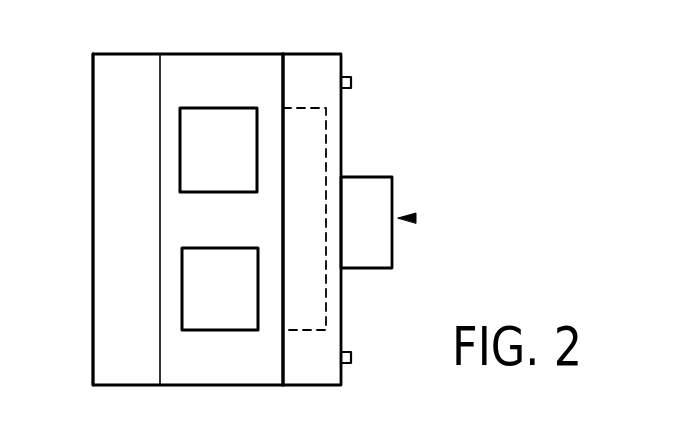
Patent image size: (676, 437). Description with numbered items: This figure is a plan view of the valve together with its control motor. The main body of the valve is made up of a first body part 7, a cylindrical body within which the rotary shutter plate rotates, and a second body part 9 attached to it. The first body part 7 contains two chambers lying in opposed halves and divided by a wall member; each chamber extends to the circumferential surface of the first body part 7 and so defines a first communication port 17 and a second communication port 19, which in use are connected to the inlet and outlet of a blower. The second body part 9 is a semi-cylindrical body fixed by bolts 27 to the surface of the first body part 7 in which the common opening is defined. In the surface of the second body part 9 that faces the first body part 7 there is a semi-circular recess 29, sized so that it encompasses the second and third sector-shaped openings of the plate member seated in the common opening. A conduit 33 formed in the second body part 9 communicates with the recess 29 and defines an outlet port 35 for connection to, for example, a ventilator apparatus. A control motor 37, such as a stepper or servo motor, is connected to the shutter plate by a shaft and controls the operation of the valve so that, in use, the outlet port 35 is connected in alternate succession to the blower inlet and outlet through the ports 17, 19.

The first body part 7 is at (176, 68).
The second body part 9 is at (330, 64).
The first communication port 17 is at (225, 320).
The second communication port 19 is at (230, 118).
The bolts 27 is at (353, 83).
The recess 29 is at (313, 136).
The conduit 33 is at (380, 189).
The outlet port 35 is at (414, 218).
The control motor 37 is at (122, 365).